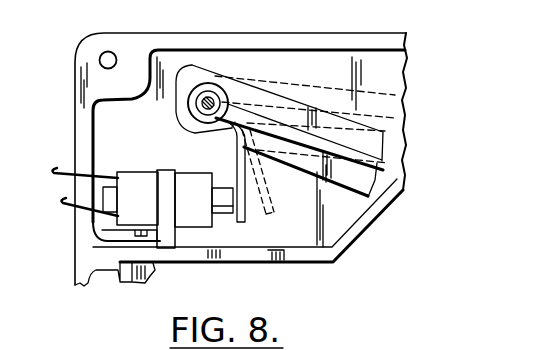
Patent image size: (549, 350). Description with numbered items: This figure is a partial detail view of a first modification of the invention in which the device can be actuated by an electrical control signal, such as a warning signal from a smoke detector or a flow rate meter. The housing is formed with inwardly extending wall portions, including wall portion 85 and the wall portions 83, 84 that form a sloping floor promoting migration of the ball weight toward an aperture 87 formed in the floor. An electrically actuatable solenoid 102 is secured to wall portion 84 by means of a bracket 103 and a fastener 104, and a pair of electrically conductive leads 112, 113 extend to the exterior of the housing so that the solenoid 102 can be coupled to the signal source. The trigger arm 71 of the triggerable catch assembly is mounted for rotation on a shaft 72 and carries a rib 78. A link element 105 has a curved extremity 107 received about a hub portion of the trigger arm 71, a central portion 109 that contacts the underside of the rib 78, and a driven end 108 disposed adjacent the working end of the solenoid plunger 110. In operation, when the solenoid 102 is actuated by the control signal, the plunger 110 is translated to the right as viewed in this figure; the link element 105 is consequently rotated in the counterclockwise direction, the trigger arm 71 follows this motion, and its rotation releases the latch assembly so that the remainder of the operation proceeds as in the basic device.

The wall portion 85 is at (80, 128).
The trigger arm 71 is at (262, 95).
The shaft 72 is at (198, 105).
The curved extremity 107 is at (199, 97).
The central portion 109 is at (235, 122).
The rib 78 is at (343, 150).
The link element 105 is at (218, 134).
The driven end 108 is at (247, 218).
The electrically actuatable solenoid 102 is at (137, 165).
The bracket 103 is at (164, 215).
The solenoid plunger 110 is at (219, 210).
The electrically conductive lead 112 is at (63, 168).
The electrically conductive lead 113 is at (66, 200).
The fastener 104 is at (103, 229).
The wall portion 84 is at (198, 246).
The aperture 87 is at (257, 250).
The wall portion 83 is at (306, 246).